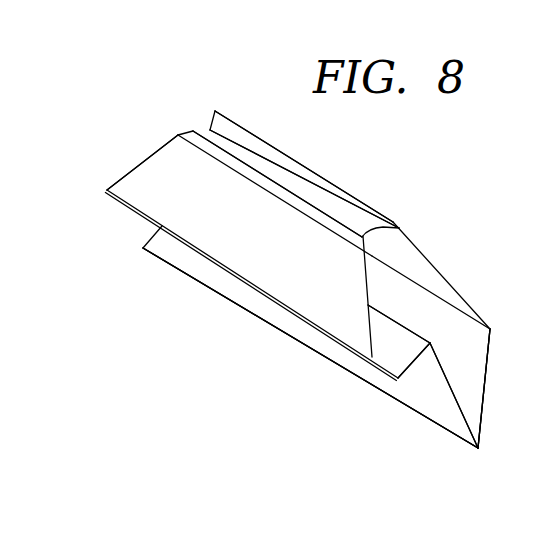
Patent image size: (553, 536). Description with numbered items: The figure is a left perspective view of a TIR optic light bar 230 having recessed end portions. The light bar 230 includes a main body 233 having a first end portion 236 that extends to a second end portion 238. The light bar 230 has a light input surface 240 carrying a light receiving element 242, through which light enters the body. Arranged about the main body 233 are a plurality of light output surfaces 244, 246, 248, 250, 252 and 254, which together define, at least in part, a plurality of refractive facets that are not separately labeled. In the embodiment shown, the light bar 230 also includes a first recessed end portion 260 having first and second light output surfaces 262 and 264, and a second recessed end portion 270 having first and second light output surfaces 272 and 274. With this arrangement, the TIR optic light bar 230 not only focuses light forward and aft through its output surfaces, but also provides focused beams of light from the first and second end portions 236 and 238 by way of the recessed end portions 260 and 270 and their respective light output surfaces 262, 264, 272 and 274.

The TIR optic light bar 230 is at (352, 408).
The main body 233 is at (162, 258).
The first end portion 236 is at (150, 242).
The second end portion 238 is at (450, 298).
The light input surface 240 is at (272, 152).
The light receiving element 242 is at (325, 205).
The light output surface 244 is at (157, 190).
The light output surface 246 is at (280, 303).
The light output surface 248 is at (414, 362).
The light output surface 250 is at (345, 357).
The light output surface 252 is at (483, 417).
The light output surface 254 is at (438, 265).
The first recessed end portion 260 is at (187, 122).
The first light output surface 262 is at (210, 133).
The second light output surface 264 is at (160, 147).
The second recessed end portion 270 is at (448, 338).
The first light output surface 272 is at (400, 238).
The second light output surface 274 is at (387, 340).